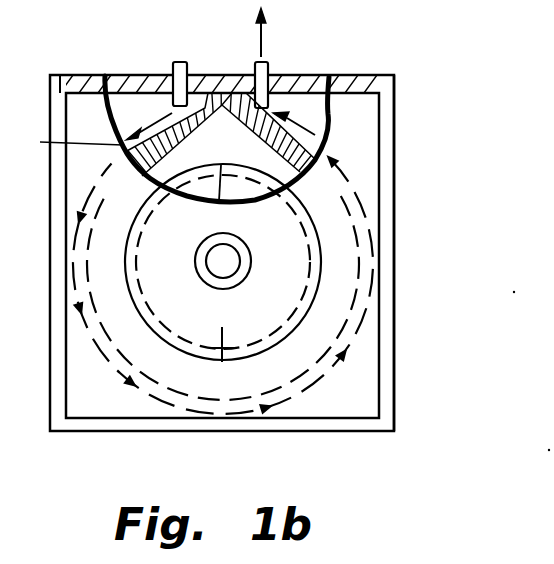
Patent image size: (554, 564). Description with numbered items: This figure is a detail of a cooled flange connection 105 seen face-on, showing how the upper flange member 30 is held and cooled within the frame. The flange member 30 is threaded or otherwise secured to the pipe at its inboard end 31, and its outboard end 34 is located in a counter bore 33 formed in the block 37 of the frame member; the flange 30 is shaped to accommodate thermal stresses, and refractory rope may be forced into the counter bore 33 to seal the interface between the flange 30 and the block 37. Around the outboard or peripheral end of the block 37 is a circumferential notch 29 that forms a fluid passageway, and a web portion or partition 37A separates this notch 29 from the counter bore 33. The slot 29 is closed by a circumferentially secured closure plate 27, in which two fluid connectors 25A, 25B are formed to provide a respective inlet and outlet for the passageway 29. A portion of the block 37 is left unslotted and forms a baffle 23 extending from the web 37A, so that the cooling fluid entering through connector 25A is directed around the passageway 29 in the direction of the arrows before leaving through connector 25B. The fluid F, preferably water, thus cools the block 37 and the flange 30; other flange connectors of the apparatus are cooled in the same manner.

The housing 105 is at (22, 180).
The circumferential notch 29 is at (122, 106).
The closure plate 27 is at (396, 114).
The fluid connector 25A is at (176, 66).
The fluid connector 25B is at (270, 70).
The fluid F is at (180, 5).
The block 37 is at (318, 106).
The web portion 37A is at (61, 143).
The baffle 23 is at (206, 100).
The upper flange member 30 is at (292, 295).
The inboard end 31 is at (197, 254).
The counter bore 33 is at (214, 200).
The outboard end 34 is at (220, 335).